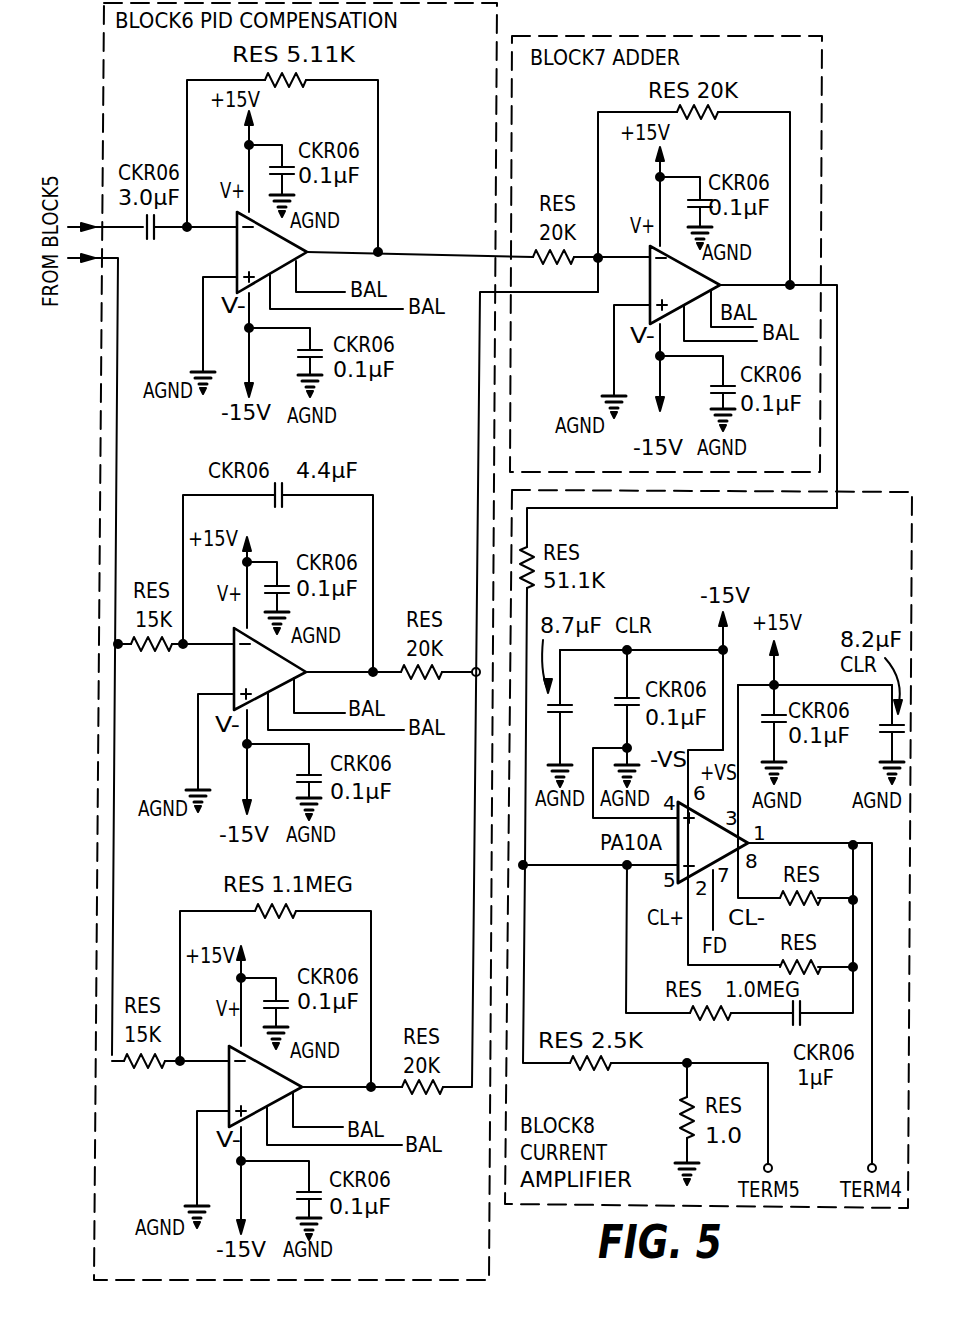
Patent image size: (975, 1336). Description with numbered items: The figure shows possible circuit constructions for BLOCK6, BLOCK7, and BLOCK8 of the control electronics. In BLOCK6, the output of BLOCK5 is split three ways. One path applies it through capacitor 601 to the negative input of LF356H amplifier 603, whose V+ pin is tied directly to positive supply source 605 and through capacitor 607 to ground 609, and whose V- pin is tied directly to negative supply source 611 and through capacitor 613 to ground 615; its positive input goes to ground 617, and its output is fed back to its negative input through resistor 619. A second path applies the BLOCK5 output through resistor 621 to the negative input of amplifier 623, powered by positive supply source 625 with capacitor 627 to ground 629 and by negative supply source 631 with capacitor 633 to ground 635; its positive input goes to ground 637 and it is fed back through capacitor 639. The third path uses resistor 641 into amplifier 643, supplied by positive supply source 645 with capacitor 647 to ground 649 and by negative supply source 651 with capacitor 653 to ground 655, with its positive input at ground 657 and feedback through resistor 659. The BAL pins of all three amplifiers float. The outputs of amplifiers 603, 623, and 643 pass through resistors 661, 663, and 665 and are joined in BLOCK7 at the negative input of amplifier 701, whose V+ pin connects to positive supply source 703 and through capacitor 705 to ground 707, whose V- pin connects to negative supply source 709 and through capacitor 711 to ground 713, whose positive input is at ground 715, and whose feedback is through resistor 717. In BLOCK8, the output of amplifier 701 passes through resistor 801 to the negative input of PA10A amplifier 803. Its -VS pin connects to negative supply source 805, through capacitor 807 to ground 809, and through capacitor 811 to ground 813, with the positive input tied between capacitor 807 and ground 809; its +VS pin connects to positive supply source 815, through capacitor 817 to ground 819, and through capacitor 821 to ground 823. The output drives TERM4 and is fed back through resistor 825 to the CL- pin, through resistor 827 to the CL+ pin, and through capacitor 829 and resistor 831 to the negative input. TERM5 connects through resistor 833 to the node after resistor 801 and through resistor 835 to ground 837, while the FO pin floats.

The capacitor 601 is at (157, 242).
The LF356H amplifier 603 is at (240, 256).
The +15V source 605 is at (246, 128).
The capacitor 607 is at (284, 160).
The ground 609 is at (296, 200).
The -15V source 611 is at (244, 392).
The capacitor 613 is at (302, 355).
The ground 615 is at (322, 390).
The ground 617 is at (200, 370).
The resistor 619 is at (303, 85).
The resistor 621 is at (162, 652).
The LF356H amplifier 623 is at (237, 668).
The +15V source 625 is at (244, 548).
The capacitor 627 is at (279, 578).
The ground 629 is at (291, 616).
The -15V source 631 is at (243, 808).
The capacitor 633 is at (302, 778).
The ground 635 is at (321, 812).
The ground 637 is at (195, 788).
The capacitor 639 is at (285, 500).
The resistor 641 is at (160, 1068).
The LF356H amplifier 643 is at (236, 1083).
The +15V source 645 is at (238, 963).
The capacitor 647 is at (279, 993).
The ground 649 is at (290, 1031).
The -15V source 651 is at (237, 1228).
The capacitor 653 is at (302, 1195).
The ground 655 is at (321, 1232).
The ground 657 is at (194, 1205).
The resistor 659 is at (292, 915).
The resistor 661 is at (565, 270).
The resistor 663 is at (436, 680).
The resistor 665 is at (433, 1094).
The LF356H amplifier 701 is at (658, 276).
The +15V source 703 is at (657, 158).
The capacitor 705 is at (700, 194).
The ground 707 is at (713, 236).
The -15V source 709 is at (656, 408).
The capacitor 711 is at (716, 388).
The ground 713 is at (735, 422).
The ground 715 is at (611, 396).
The resistor 717 is at (711, 118).
The resistor 801 is at (530, 545).
The PA10A amplifier 803 is at (713, 842).
The -15V source 805 is at (720, 628).
The capacitor 807 is at (633, 695).
The ground 809 is at (624, 766).
The capacitor 811 is at (570, 706).
The ground 813 is at (548, 768).
The +15V source 815 is at (778, 652).
The capacitor 817 is at (784, 712).
The ground 819 is at (764, 766).
The capacitor 821 is at (882, 736).
The ground 823 is at (885, 778).
The resistor 825 is at (832, 872).
The resistor 827 is at (782, 968).
The capacitor 829 is at (803, 1013).
The resistor 831 is at (727, 1020).
The resistor 833 is at (576, 1068).
The resistor 835 is at (684, 1108).
The ground 837 is at (684, 1166).